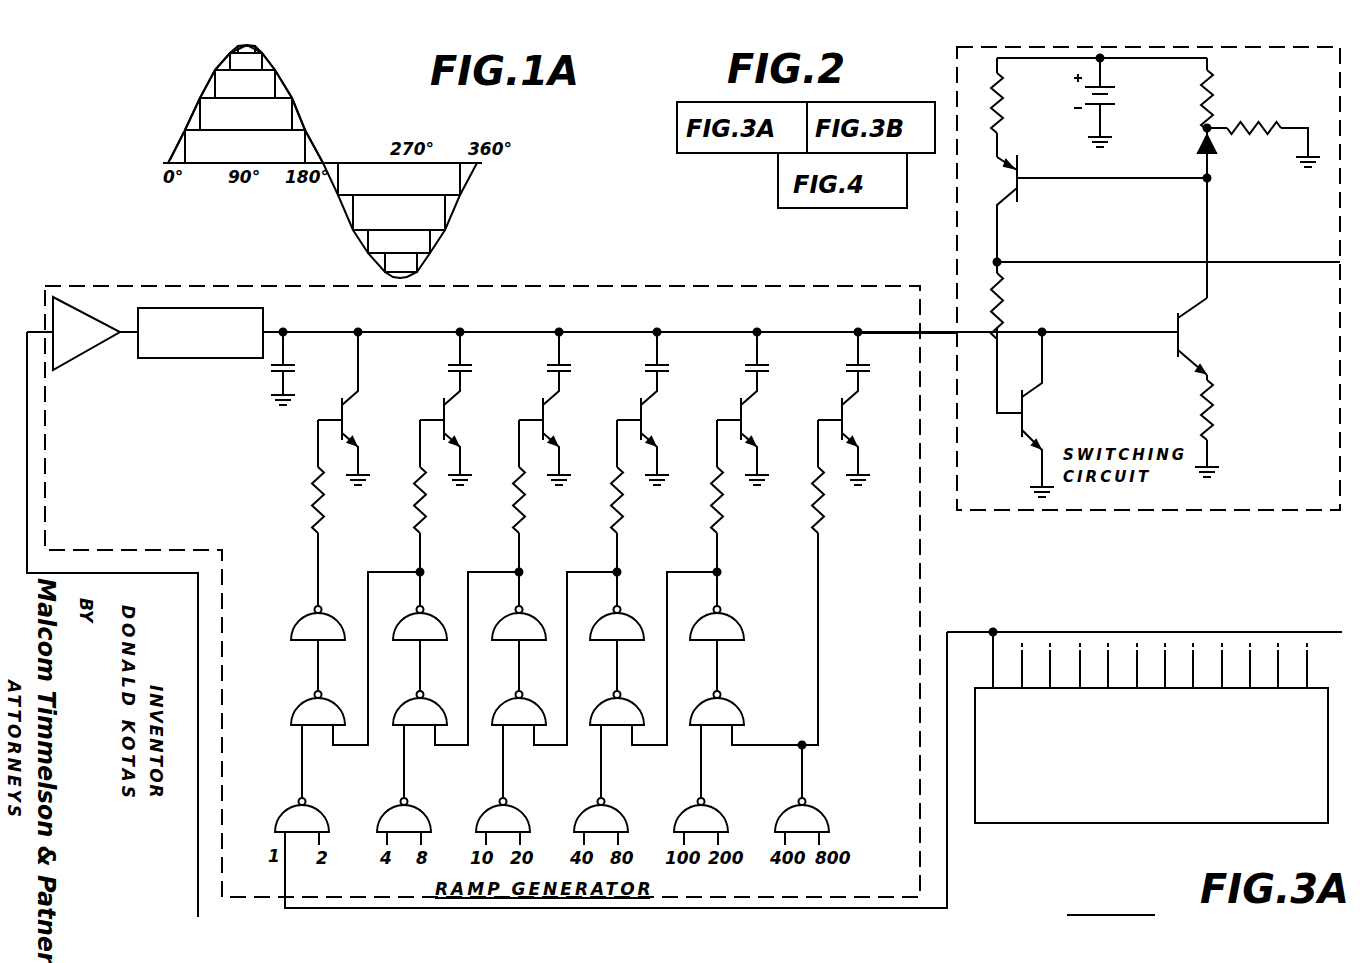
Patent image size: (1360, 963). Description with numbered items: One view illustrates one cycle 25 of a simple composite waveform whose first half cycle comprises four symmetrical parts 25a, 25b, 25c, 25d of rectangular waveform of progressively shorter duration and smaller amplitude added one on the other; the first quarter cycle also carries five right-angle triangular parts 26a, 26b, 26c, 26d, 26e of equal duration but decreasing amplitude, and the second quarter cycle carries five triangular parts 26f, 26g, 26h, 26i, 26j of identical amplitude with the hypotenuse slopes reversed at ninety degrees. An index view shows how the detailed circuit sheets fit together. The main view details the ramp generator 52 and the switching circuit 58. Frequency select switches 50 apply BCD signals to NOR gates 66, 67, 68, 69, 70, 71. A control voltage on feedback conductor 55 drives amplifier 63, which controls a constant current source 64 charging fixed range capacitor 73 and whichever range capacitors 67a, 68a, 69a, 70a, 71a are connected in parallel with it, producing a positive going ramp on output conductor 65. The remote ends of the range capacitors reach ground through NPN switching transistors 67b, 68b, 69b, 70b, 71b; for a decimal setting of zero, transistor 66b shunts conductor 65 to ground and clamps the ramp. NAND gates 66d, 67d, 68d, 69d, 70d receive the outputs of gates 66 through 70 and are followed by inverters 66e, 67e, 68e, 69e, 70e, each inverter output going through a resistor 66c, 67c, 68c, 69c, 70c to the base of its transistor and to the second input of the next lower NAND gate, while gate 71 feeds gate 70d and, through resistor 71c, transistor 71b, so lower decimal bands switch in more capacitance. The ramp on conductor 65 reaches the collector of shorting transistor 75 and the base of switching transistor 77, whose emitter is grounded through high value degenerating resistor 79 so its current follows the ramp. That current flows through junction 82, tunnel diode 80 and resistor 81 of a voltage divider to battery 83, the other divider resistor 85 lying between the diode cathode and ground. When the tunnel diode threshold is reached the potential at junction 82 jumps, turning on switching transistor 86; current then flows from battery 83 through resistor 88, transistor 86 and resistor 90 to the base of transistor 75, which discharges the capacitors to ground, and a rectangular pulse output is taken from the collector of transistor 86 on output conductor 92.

In FIG. 1A, the cycle of composite waveform 25 is at (278, 216).
In FIG. 1A, the rectangular waveform part 25a is at (265, 154).
In FIG. 1A, the rectangular waveform part 25b is at (265, 126).
In FIG. 1A, the rectangular waveform part 25c is at (267, 97).
In FIG. 1A, the rectangular waveform part 25d is at (232, 60).
In FIG. 1A, the right-angle triangular waveform part 26a is at (178, 145).
In FIG. 1A, the right-angle triangular waveform part 26b is at (193, 115).
In FIG. 1A, the right-angle triangular waveform part 26c is at (208, 90).
In FIG. 1A, the right-angle triangular waveform part 26d is at (223, 66).
In FIG. 1A, the right-angle triangular waveform part 26e is at (240, 50).
In FIG. 1A, the triangular waveform part 26f is at (312, 158).
In FIG. 1A, the triangular waveform part 26g is at (297, 108).
In FIG. 1A, the triangular waveform part 26h is at (283, 85).
In FIG. 1A, the triangular waveform part 26i is at (268, 63).
In FIG. 1A, the triangular waveform part 26j is at (258, 50).
In FIG. 3A, the frequency select switches 50 is at (1100, 825).
In FIG. 3A, the ramp generator 52 is at (918, 582).
In FIG. 3A, the feedback control conductor 55 is at (28, 510).
In FIG. 3A, the switching circuit 58 is at (1250, 510).
In FIG. 3A, the amplifier 63 is at (86, 350).
In FIG. 3A, the constant current source 64 is at (215, 360).
In FIG. 3A, the output conductor 65 is at (905, 336).
In FIG. 3A, the NOR gate 66 is at (280, 820).
In FIG. 3A, the transistor 66b is at (341, 402).
In FIG. 3A, the resistor 66c is at (316, 490).
In FIG. 3A, the NAND gate 66d is at (298, 715).
In FIG. 3A, the inverter 66e is at (298, 625).
In FIG. 3A, the NOR gate 67 is at (385, 820).
In FIG. 3A, the range capacitor 67a is at (449, 366).
In FIG. 3A, the NPN switching transistor 67b is at (443, 402).
In FIG. 3A, the resistor 67c is at (418, 490).
In FIG. 3A, the NAND gate 67d is at (433, 735).
In FIG. 3A, the inverter 67e is at (430, 618).
In FIG. 3A, the NOR gate 68 is at (483, 820).
In FIG. 3A, the range capacitor 68a is at (548, 366).
In FIG. 3A, the NPN switching transistor 68b is at (542, 402).
In FIG. 3A, the resistor 68c is at (517, 495).
In FIG. 3A, the NAND gate 68d is at (533, 735).
In FIG. 3A, the inverter 68e is at (530, 618).
In FIG. 3A, the NOR gate 69 is at (580, 820).
In FIG. 3A, the range capacitor 69a is at (646, 366).
In FIG. 3A, the NPN switching transistor 69b is at (640, 402).
In FIG. 3A, the resistor 69c is at (615, 495).
In FIG. 3A, the NAND gate 69d is at (632, 735).
In FIG. 3A, the inverter 69e is at (628, 618).
In FIG. 3A, the NOR gate 70 is at (680, 820).
In FIG. 3A, the range capacitor 70a is at (746, 366).
In FIG. 3A, the NPN switching transistor 70b is at (740, 402).
In FIG. 3A, the resistor 70c is at (715, 495).
In FIG. 3A, the NAND gate 70d is at (733, 735).
In FIG. 3A, the inverter 70e is at (728, 618).
In FIG. 3A, the NOR gate 71 is at (780, 820).
In FIG. 3A, the range capacitor 71a is at (847, 366).
In FIG. 3A, the NPN switching transistor 71b is at (841, 402).
In FIG. 3A, the resistor 71c is at (816, 495).
In FIG. 3A, the fixed range capacitor 73 is at (272, 372).
In FIG. 3A, the shorting NPN switching transistor 75 is at (1020, 425).
In FIG. 3A, the NPN switching transistor 77 is at (1177, 318).
In FIG. 3A, the degenerating resistor 79 is at (1210, 410).
In FIG. 3A, the tunnel diode 80 is at (1215, 147).
In FIG. 3A, the resistor of voltage divider 81 is at (1207, 100).
In FIG. 3A, the junction 82 is at (1208, 180).
In FIG. 3A, the battery 83 is at (1104, 90).
In FIG. 3A, the resistor of voltage divider 85 is at (1258, 128).
In FIG. 3A, the switching transistor 86 is at (1018, 190).
In FIG. 3A, the resistor 88 is at (998, 108).
In FIG. 3A, the resistor 90 is at (1000, 300).
In FIG. 3A, the output conductor 92 is at (1272, 262).